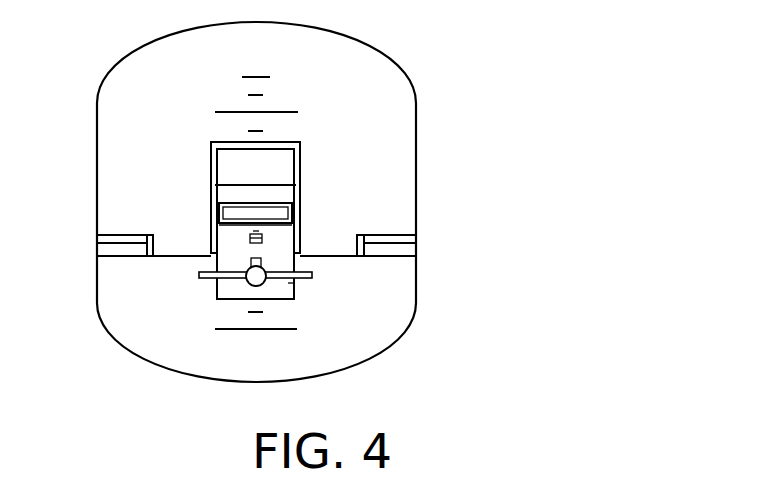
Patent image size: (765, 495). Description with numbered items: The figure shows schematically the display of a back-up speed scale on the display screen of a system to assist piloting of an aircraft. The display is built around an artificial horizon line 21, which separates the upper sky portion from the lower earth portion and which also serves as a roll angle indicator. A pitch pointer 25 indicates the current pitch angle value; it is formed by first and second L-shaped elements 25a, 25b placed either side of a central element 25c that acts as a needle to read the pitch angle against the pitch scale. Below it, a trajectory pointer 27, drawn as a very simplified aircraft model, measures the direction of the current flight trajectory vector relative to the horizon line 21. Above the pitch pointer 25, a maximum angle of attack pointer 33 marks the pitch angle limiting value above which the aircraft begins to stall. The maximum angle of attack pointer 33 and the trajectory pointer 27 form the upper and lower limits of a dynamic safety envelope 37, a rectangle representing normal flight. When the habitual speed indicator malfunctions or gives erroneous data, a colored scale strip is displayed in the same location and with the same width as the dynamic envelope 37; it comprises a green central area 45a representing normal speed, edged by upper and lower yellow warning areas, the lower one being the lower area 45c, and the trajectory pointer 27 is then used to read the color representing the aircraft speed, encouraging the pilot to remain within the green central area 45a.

The artificial horizon line 21 is at (108, 256).
The pitch pointer 25 is at (657, 195).
The first L-shaped element 25a is at (127, 234).
The second L-shaped element 25b is at (375, 235).
The central element 25c is at (253, 236).
The trajectory pointer 27 is at (205, 278).
The maximum angle of attack pointer 33 is at (297, 141).
The dynamic safety envelope 37 is at (303, 152).
The green central area 45a is at (292, 213).
The lower area 45c is at (285, 262).